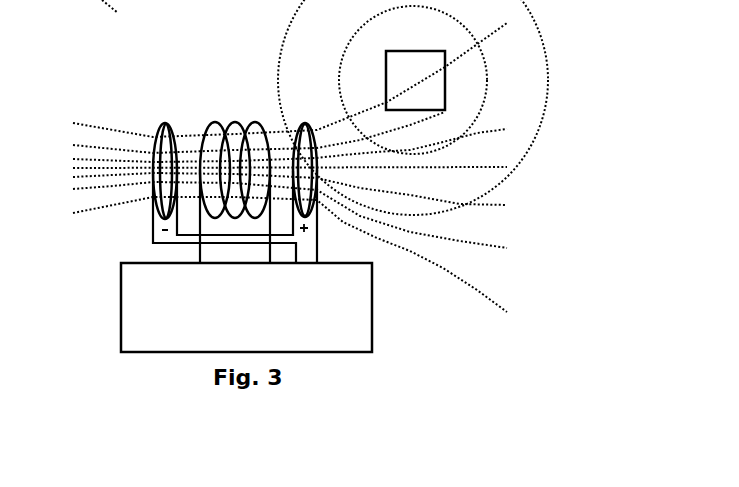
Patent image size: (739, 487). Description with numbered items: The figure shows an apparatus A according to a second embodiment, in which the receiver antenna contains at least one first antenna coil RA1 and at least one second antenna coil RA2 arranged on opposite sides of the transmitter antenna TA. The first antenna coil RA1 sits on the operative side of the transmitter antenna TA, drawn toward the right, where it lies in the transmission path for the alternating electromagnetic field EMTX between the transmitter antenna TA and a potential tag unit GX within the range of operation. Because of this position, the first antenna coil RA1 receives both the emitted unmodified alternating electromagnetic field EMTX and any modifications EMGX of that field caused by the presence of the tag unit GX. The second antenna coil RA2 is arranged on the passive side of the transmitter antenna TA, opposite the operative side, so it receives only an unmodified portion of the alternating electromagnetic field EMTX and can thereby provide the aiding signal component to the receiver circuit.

The apparatus A is at (120, 310).
The second antenna coil RA2 is at (163, 123).
The transmitter antenna TA is at (235, 123).
The first antenna coil RA1 is at (303, 123).
The tag unit GX is at (418, 51).
The alternating electromagnetic field EMTX is at (256, 167).
The modification of the alternating electromagnetic field EMGX is at (413, 107).